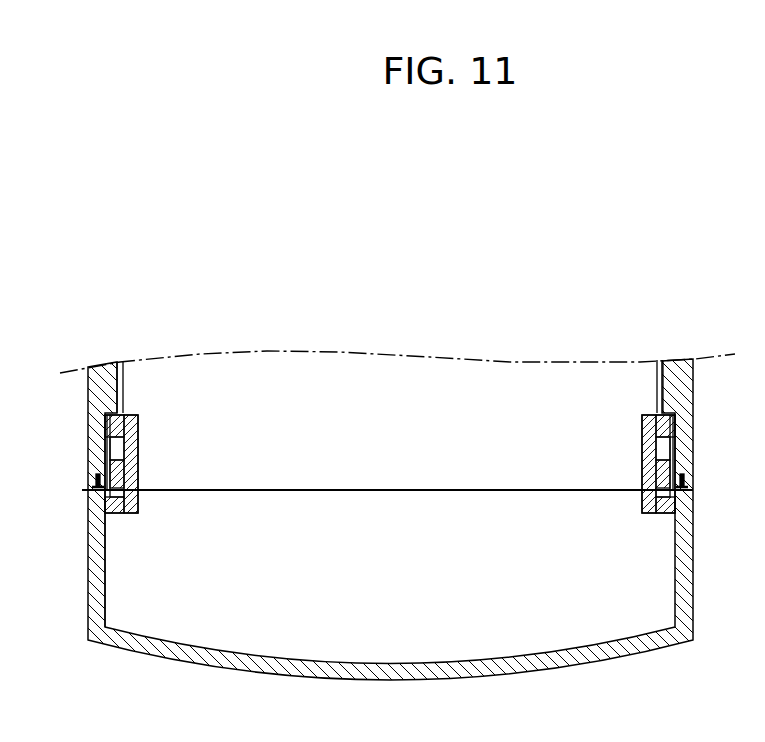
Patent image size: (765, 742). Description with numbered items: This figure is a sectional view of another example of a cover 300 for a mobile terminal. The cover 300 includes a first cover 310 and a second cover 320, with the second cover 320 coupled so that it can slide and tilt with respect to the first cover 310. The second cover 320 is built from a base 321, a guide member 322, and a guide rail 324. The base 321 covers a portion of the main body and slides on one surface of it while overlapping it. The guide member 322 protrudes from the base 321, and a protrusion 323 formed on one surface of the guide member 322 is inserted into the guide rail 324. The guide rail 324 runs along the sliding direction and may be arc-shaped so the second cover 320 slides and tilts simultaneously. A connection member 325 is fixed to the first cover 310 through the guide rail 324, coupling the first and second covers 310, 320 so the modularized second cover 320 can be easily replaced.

The cover 300 is at (376, 487).
The first cover 310 is at (88, 393).
The second cover 320 is at (388, 448).
The base 321 is at (105, 585).
The guide member 322 is at (139, 458).
The protrusion 323 is at (123, 414).
The guide rail 324 is at (118, 362).
The connection member 325 is at (88, 490).